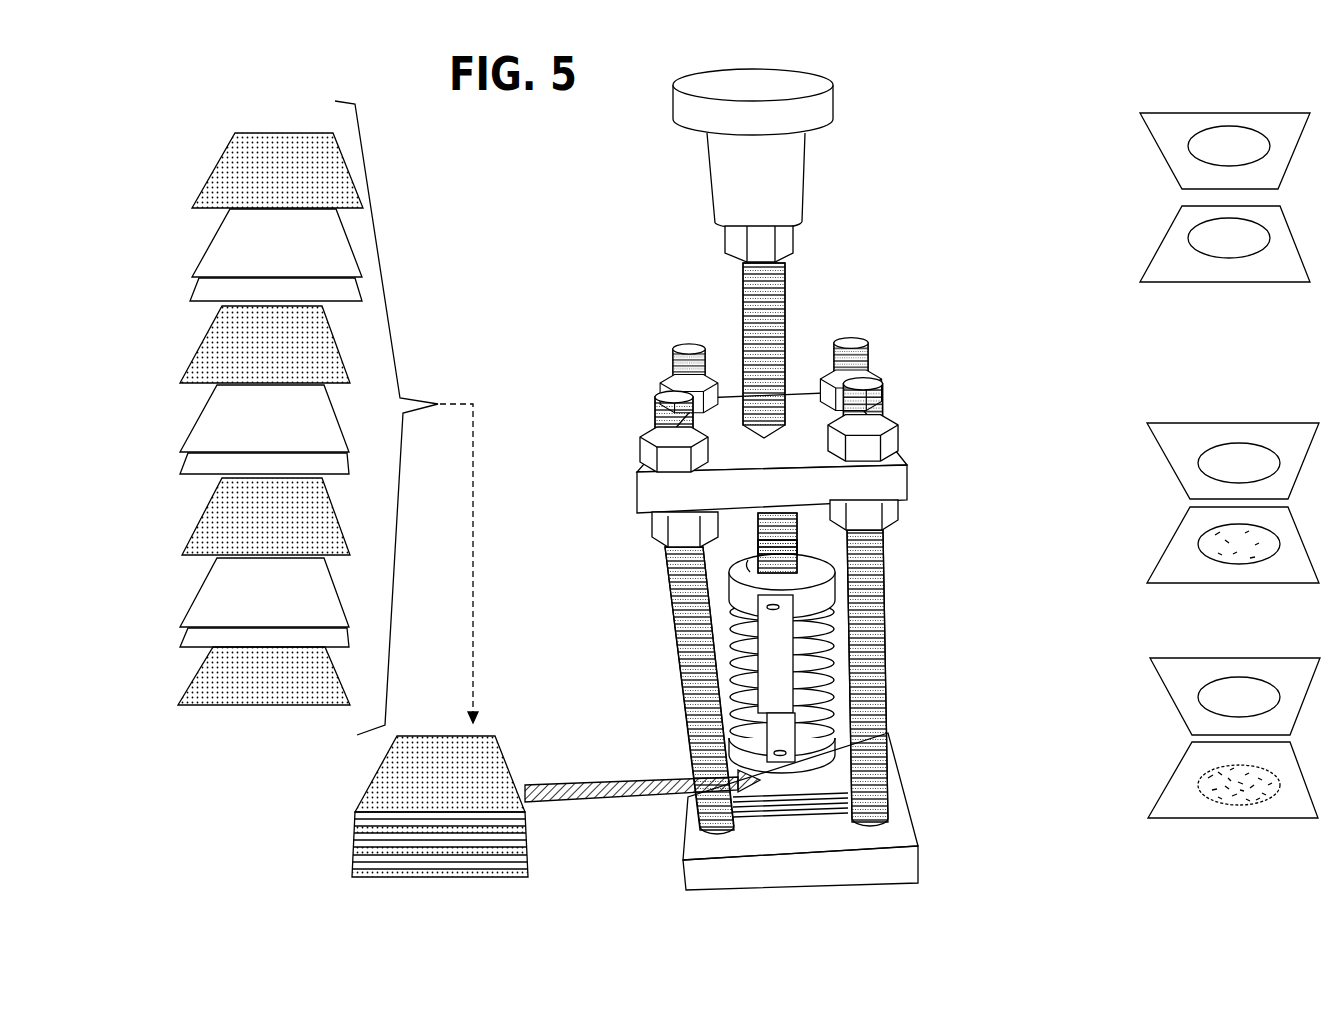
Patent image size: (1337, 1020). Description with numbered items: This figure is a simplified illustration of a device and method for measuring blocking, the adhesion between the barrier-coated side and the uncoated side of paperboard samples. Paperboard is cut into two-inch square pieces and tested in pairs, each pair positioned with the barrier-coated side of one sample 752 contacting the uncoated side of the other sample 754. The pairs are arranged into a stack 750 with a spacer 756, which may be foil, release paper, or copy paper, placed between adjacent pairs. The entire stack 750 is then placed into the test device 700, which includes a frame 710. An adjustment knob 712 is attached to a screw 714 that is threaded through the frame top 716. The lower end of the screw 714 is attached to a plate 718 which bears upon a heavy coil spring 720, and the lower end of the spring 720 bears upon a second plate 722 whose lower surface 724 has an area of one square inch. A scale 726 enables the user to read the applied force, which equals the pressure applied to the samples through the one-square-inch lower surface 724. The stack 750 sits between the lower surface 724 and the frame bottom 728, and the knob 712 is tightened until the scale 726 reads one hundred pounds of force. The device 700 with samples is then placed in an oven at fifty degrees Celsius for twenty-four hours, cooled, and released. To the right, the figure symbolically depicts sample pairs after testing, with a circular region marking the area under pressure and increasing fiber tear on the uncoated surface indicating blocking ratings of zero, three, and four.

The test device 700 is at (884, 258).
The frame 710 is at (829, 611).
The adjustment knob 712 is at (771, 97).
The screw 714 is at (743, 308).
The frame top 716 is at (791, 496).
The plate 718 is at (750, 555).
The heavy coil spring 720 is at (742, 655).
The plate 722 is at (825, 743).
The lower surface 724 is at (813, 770).
The scale 726 is at (777, 703).
The frame bottom 728 is at (809, 883).
The stack 750 is at (345, 801).
The sample 752 is at (216, 234).
The sample 754 is at (200, 288).
The spacer 756 is at (208, 179).